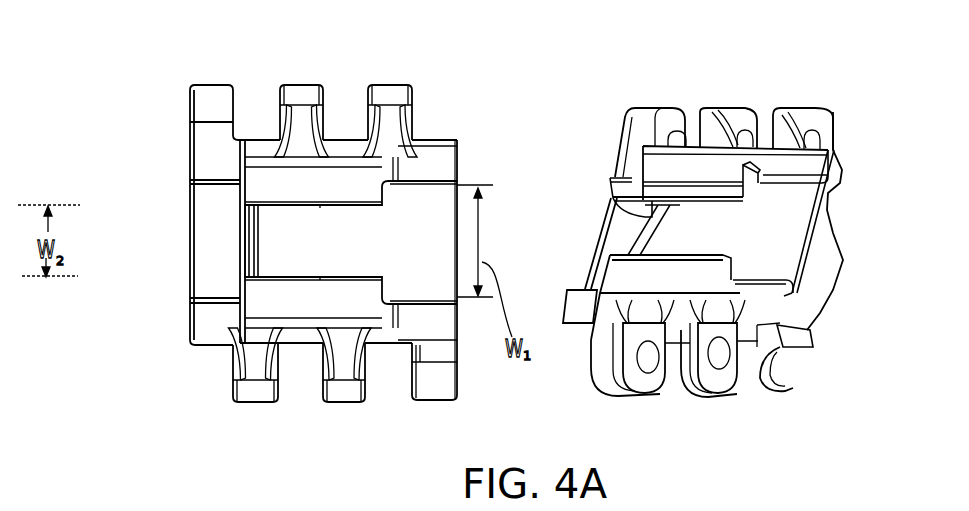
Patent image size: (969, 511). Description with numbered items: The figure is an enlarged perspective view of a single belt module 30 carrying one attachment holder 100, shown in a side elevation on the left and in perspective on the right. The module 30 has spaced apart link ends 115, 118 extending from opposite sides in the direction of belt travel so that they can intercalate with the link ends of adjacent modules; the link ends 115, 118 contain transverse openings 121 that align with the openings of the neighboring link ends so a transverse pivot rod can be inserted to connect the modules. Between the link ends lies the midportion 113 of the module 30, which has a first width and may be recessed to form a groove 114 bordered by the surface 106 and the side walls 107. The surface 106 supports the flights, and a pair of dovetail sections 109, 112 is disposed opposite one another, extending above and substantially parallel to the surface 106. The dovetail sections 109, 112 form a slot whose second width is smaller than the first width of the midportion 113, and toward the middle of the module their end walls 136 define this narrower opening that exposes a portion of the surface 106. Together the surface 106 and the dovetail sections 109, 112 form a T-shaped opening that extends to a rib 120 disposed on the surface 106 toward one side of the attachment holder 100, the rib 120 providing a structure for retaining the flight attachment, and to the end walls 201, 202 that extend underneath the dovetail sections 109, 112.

The module 30 is at (163, 88).
The attachment holder 100 is at (452, 97).
The surface 106 is at (410, 252).
The side walls 107 is at (822, 188).
The dovetail section 109 is at (330, 190).
The dovetail section 112 is at (343, 293).
The midportion 113 is at (437, 270).
The groove 114 is at (723, 222).
The link ends 115 is at (213, 90).
The link ends 118 is at (262, 390).
The rib 120 is at (250, 232).
The transverse openings 121 is at (748, 135).
The end walls 136 is at (320, 208).
The end wall 201 is at (610, 180).
The end wall 202 is at (807, 347).